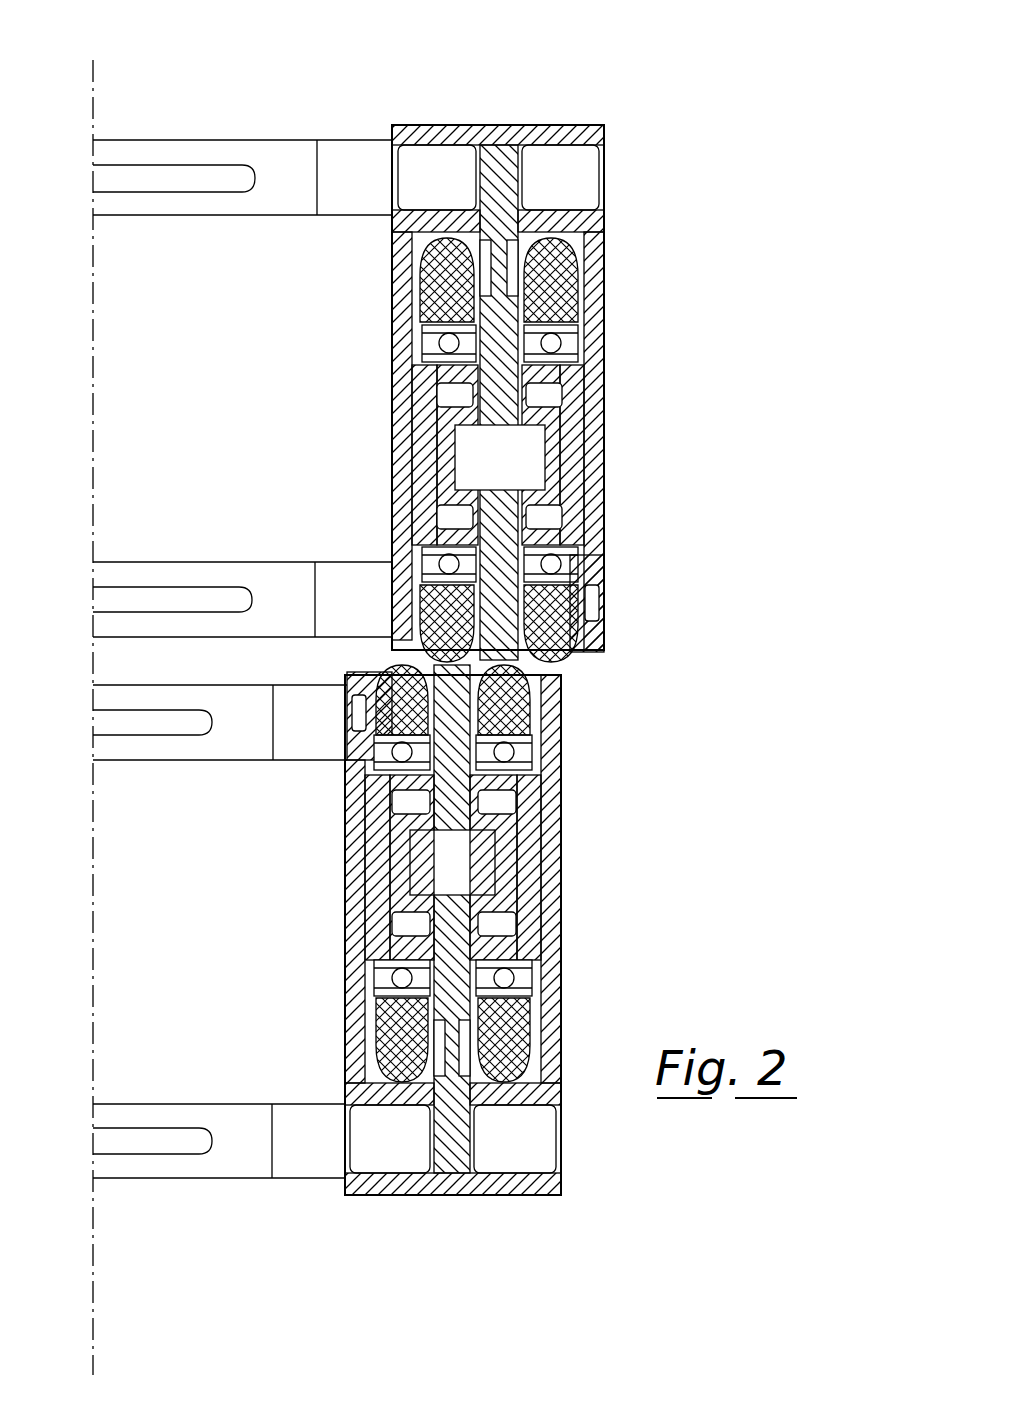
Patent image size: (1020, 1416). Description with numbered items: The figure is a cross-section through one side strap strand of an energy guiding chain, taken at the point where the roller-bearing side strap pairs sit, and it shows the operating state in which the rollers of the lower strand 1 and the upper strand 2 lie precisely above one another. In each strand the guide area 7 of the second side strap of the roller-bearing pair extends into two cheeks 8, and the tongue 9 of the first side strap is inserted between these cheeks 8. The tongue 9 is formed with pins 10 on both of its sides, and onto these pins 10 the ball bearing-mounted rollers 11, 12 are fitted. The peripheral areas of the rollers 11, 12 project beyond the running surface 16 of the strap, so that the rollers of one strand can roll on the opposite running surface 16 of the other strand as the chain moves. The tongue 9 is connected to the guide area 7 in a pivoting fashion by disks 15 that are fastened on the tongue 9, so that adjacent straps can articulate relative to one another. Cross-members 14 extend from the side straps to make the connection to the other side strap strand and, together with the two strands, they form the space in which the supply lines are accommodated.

The lower strand 1 is at (444, 930).
The upper strand 2 is at (501, 393).
The guide area 7 is at (500, 165).
The cheeks 8 is at (345, 1000).
The tongue 9 is at (495, 355).
The pins 10 is at (467, 412).
The roller 11 is at (545, 290).
The roller 12 is at (452, 285).
The cross-members 14 is at (268, 162).
The disks 15 is at (415, 457).
The running surface 16 is at (363, 668).